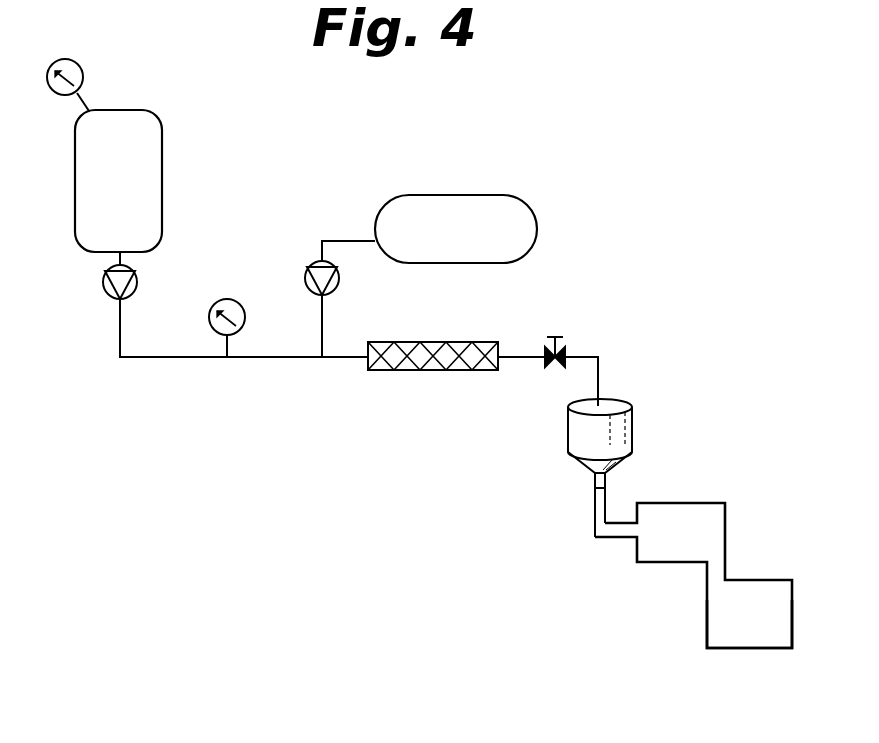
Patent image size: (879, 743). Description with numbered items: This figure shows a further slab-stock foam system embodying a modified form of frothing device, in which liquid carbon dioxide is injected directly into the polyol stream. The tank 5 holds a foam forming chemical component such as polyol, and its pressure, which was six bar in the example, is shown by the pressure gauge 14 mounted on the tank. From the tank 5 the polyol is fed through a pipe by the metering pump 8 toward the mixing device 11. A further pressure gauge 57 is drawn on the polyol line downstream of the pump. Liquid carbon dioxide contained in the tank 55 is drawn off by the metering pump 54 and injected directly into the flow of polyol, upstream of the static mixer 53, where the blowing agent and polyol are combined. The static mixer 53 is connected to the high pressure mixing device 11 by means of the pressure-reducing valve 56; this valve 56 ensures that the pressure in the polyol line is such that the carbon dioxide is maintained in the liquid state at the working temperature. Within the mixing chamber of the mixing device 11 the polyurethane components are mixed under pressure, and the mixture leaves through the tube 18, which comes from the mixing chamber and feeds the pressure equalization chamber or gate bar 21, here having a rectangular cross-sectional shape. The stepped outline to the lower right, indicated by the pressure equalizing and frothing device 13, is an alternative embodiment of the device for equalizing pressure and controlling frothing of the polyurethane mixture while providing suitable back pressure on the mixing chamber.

The tank 5 is at (146, 113).
The pressure gauge 14 is at (83, 62).
The metering pump 8 is at (138, 283).
The pressure gauge 57 is at (230, 298).
The metering pump 54 is at (314, 268).
The tank 55 is at (437, 201).
The static mixer 53 is at (432, 371).
The pressure-reducing valve 56 is at (544, 350).
The mixing device 11 is at (569, 424).
The tube 18 is at (594, 510).
The pressure equalization chamber or gate bar 21 is at (682, 506).
The pressure equalizing and frothing device 13 is at (695, 623).